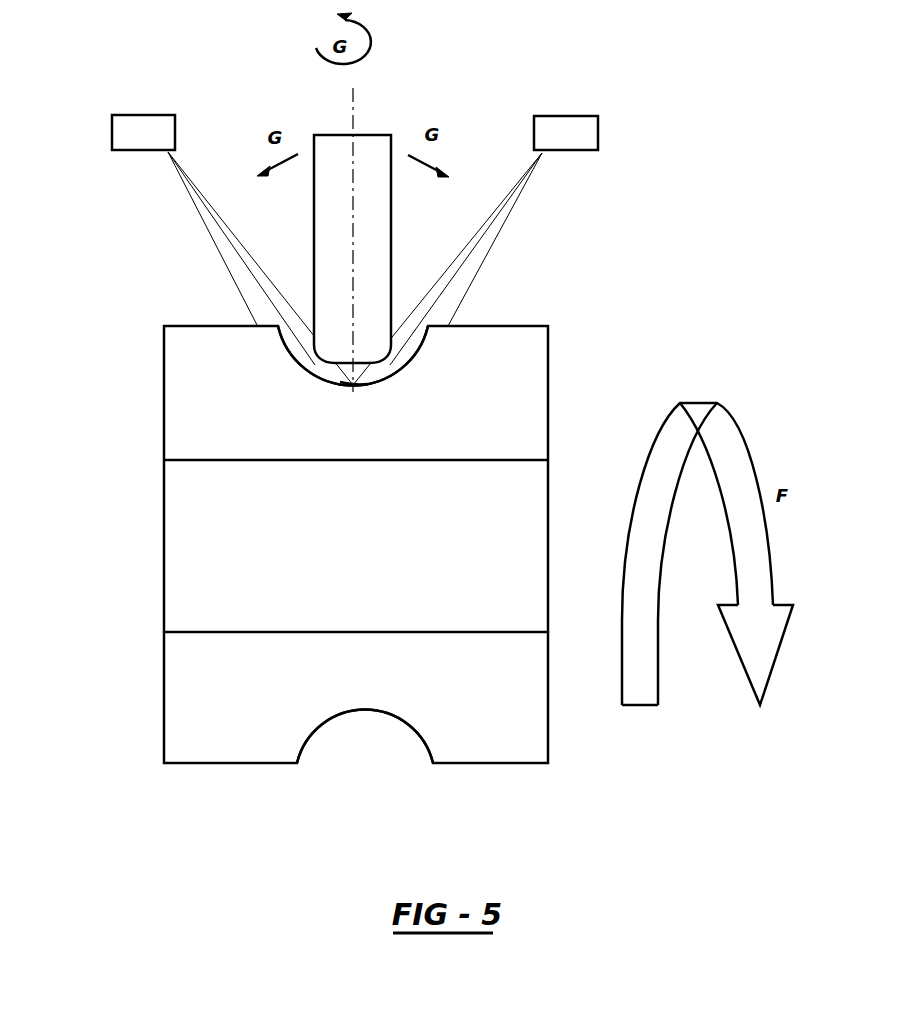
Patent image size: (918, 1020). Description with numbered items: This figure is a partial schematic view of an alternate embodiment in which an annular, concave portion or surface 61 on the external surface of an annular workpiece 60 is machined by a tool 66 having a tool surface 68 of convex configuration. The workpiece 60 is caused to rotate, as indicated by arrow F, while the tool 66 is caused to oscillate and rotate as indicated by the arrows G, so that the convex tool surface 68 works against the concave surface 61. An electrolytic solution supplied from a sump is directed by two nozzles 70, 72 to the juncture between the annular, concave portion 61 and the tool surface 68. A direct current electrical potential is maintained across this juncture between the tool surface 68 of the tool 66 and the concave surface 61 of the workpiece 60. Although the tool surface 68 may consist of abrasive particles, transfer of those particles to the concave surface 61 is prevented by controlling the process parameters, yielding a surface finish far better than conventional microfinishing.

The workpiece 60 is at (548, 390).
The annular concave portion 61 is at (290, 360).
The tool 66 is at (391, 263).
The tool surface 68 is at (375, 360).
The nozzle 70 is at (565, 116).
The nozzle 72 is at (145, 115).